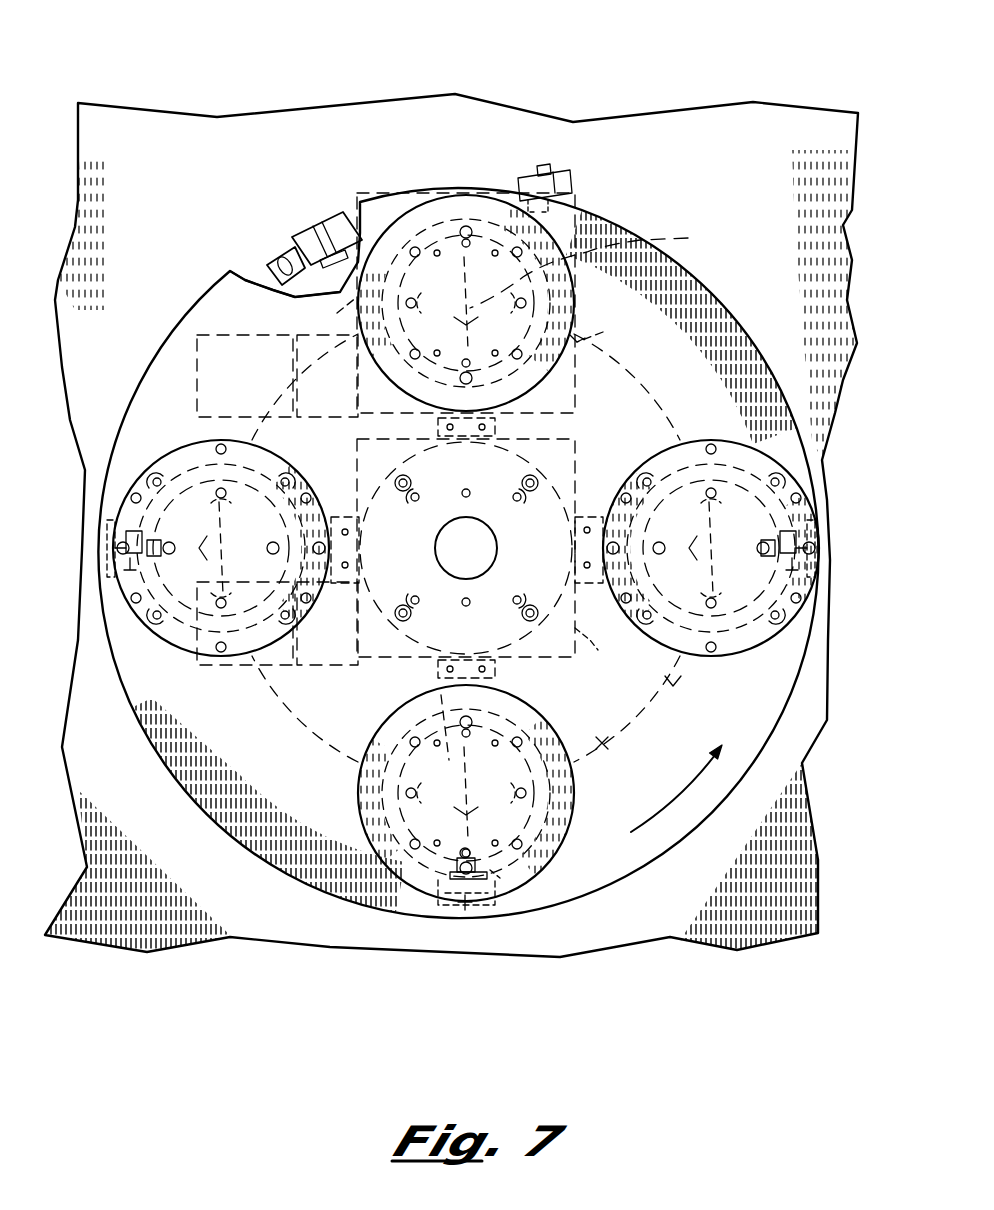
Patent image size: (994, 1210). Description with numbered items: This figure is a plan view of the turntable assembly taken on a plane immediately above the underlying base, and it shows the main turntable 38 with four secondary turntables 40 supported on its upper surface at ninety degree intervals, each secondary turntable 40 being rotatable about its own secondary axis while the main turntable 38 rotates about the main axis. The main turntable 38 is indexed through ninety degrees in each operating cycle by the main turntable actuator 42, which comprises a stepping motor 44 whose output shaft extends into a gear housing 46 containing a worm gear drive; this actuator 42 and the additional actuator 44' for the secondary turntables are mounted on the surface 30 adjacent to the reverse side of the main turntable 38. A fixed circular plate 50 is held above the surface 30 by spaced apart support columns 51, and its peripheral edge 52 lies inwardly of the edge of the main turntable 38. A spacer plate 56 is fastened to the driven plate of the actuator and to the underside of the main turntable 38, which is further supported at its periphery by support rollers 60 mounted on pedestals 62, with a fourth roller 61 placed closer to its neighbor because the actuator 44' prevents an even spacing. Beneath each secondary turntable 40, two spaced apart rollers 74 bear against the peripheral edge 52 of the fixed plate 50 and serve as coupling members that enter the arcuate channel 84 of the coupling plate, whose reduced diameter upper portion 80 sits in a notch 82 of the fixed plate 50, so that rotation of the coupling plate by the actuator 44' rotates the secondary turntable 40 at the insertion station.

The surface 30 is at (430, 145).
The main turntable 38 is at (612, 862).
The secondary turntable 40 is at (432, 207).
The main turntable actuator 42 is at (371, 664).
The stepping motor 44 is at (277, 539).
The actuator 44' is at (254, 274).
The gear housing 46 is at (588, 208).
The fixed circular plate 50 is at (615, 757).
The support columns 51 is at (565, 436).
The peripheral edge 52 is at (680, 688).
The spacer plate 56 is at (550, 510).
The support rollers 60 is at (467, 906).
The roller 61 is at (322, 215).
The pedestals 62 is at (292, 242).
The rollers 74 is at (466, 548).
The reduced diameter upper portion 80 is at (597, 266).
The notch 82 is at (604, 330).
The arcuate channel 84 is at (330, 315).